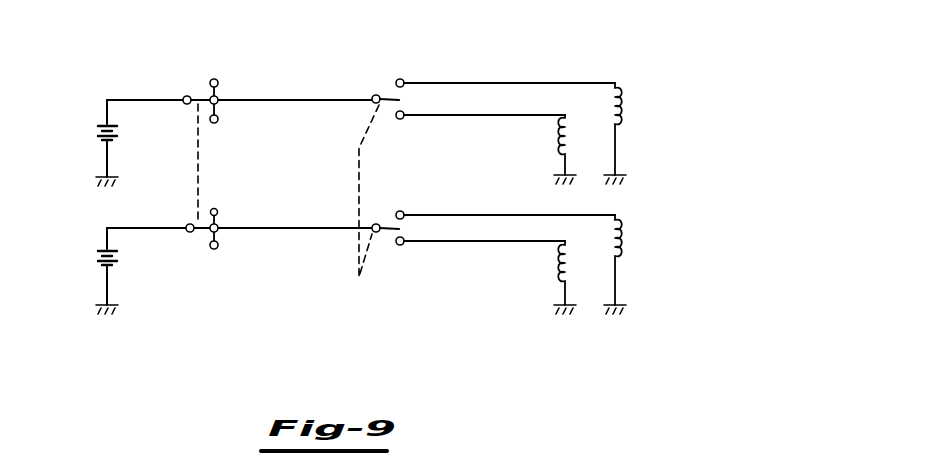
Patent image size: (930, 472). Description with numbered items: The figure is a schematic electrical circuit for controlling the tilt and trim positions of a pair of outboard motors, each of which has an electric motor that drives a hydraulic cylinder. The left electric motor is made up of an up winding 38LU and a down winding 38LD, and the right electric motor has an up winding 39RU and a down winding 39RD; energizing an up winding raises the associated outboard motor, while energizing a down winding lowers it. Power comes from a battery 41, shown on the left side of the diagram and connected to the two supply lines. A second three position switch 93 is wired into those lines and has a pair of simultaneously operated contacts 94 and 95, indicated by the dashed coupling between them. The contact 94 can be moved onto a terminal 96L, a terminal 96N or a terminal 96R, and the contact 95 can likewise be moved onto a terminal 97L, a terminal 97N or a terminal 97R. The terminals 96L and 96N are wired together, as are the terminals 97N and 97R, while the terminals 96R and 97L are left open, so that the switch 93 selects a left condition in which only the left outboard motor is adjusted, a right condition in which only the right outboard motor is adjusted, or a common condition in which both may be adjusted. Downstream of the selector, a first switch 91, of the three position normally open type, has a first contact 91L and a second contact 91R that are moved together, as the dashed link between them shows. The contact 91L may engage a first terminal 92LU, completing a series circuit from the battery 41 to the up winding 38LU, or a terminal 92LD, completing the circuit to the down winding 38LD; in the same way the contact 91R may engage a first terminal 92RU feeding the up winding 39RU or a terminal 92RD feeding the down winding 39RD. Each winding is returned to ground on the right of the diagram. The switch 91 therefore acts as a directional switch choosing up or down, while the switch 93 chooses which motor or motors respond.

The battery 41 is at (99, 133).
The contact 94 is at (186, 95).
The second three position switch 93 is at (197, 134).
The terminal 96L is at (215, 79).
The terminal 96N is at (218, 103).
The terminal 96R is at (214, 123).
The contact 95 is at (202, 232).
The terminal 97L is at (218, 212).
The terminal 97N is at (218, 231).
The terminal 97R is at (215, 249).
The first contact 91L is at (386, 97).
The second contact 91R is at (387, 233).
The first switch 91 is at (357, 172).
The first terminal 92LU is at (404, 79).
The terminal 92LD is at (402, 119).
The first terminal 92RU is at (404, 213).
The terminal 92RD is at (403, 244).
The up winding 38LU is at (622, 117).
The down winding 38LD is at (569, 156).
The up winding 39RU is at (622, 226).
The down winding 39RD is at (574, 270).